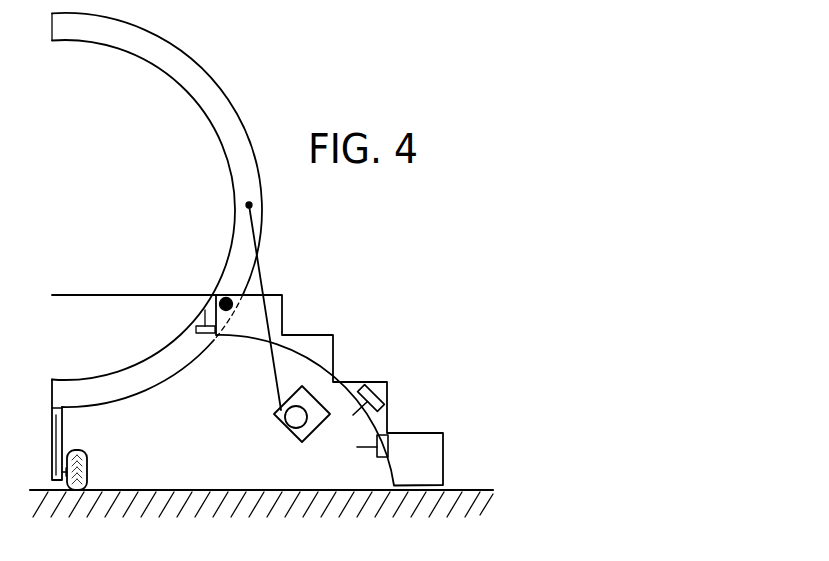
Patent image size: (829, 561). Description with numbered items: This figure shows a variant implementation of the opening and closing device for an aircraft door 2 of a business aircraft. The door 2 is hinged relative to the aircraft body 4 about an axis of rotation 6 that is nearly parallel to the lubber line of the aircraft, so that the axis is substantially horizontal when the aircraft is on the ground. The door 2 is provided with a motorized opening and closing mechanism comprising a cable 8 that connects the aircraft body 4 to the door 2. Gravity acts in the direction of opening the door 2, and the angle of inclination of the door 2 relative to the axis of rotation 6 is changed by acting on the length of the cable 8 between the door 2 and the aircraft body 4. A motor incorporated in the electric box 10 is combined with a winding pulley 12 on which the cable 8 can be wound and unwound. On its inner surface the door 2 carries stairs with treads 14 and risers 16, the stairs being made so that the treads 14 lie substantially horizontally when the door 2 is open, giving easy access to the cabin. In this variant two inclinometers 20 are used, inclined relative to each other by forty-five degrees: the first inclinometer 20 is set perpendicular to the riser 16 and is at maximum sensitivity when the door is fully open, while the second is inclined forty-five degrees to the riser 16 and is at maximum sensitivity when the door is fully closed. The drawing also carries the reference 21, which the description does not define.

The door 2 is at (252, 377).
The aircraft body 4 is at (190, 82).
The axis of rotation 6 is at (222, 297).
The cable 8 is at (262, 278).
The electric box 10 is at (301, 400).
The winding pulley 12 is at (303, 411).
The treads 14 is at (431, 433).
The risers 16 is at (388, 393).
The inclinometers 20 is at (383, 404).
The stop 21 is at (197, 329).